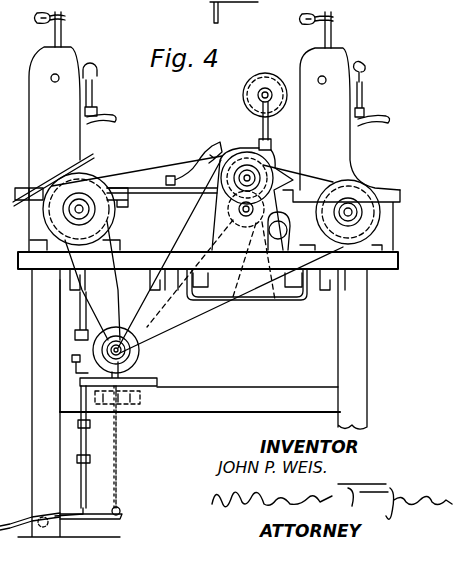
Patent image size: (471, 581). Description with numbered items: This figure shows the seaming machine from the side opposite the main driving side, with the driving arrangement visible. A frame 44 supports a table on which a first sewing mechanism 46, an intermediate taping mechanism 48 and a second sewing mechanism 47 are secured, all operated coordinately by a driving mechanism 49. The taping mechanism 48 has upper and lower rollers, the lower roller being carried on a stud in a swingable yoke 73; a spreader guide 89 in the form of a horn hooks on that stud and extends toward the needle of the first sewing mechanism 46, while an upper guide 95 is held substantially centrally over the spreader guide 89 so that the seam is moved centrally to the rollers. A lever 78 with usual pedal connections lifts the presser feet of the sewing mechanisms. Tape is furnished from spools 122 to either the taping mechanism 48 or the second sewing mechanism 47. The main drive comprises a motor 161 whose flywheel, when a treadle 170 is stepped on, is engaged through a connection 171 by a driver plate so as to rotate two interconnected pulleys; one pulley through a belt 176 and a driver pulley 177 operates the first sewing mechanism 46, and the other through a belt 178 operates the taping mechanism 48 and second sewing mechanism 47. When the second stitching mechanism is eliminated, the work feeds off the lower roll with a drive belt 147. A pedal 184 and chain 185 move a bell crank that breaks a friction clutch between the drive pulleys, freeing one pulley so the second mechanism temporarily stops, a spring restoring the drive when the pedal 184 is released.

The frame 44 is at (378, 368).
The first sewing mechanism 46 is at (98, 138).
The second sewing mechanism 47 is at (367, 166).
The taping mechanism 48 is at (272, 312).
The driving mechanism 49 is at (170, 356).
The yoke 73 is at (213, 14).
The lever 78 is at (366, 87).
The spreader guide 89 is at (184, 200).
The upper guide 95 is at (183, 173).
The tape spool 122 is at (265, 96).
The drive belt 147 is at (148, 328).
The motor 161 is at (150, 381).
The treadle 170 is at (17, 518).
The connection 171 is at (90, 482).
The belt 176 is at (93, 312).
The driver pulley 177 is at (88, 190).
The belt 178 is at (202, 322).
The pedal 184 is at (102, 520).
The chain 185 is at (118, 456).